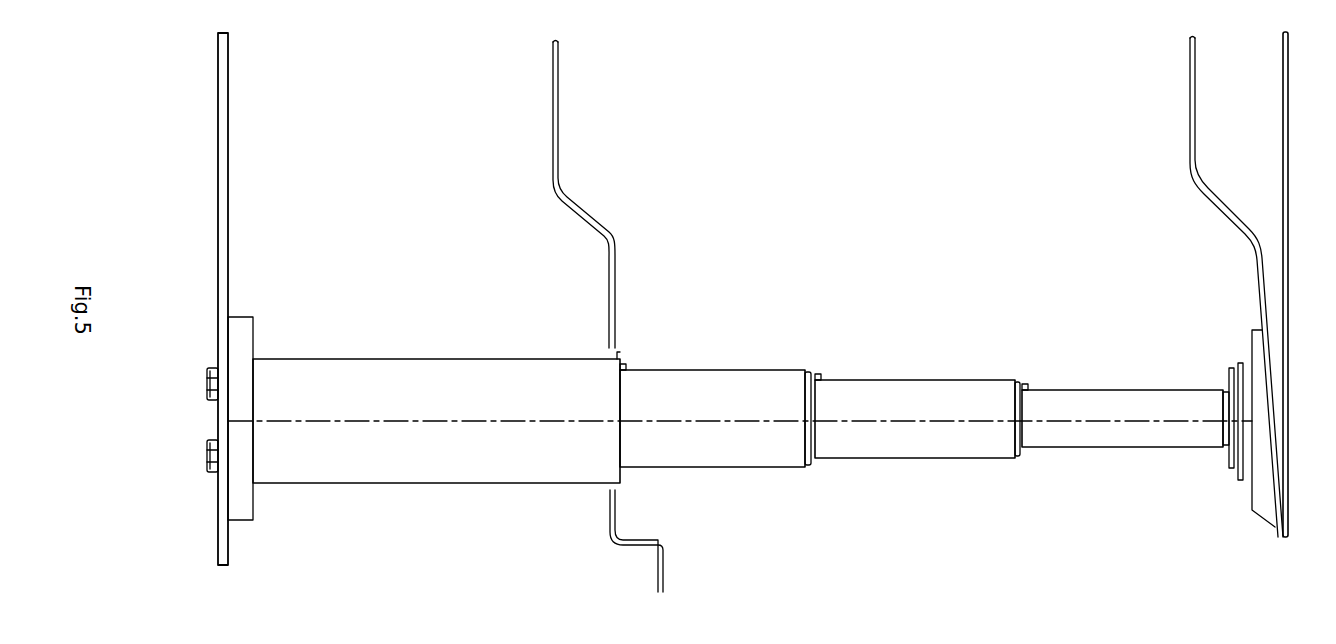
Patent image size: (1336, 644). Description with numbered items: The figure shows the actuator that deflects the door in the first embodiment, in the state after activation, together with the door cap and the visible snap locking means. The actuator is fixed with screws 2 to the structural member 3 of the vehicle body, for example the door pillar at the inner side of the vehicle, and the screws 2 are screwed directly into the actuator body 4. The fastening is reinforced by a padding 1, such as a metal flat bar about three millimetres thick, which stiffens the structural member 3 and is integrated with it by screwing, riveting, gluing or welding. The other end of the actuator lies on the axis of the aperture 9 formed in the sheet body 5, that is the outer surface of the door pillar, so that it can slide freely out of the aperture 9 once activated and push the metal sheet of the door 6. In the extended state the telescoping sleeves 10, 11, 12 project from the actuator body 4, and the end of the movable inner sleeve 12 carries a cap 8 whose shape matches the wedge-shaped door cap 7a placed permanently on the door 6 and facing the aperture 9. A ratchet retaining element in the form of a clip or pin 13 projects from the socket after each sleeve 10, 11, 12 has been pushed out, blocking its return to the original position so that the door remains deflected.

The padding 1 is at (312, 352).
The screws 2 is at (155, 449).
The structural member 3 is at (156, 299).
The actuator body 4 is at (436, 470).
The sheet body 5 is at (648, 195).
The door 6 is at (1177, 272).
The door cap 7a is at (1172, 316).
The cap 8 is at (1156, 335).
The aperture 9 is at (578, 540).
The sleeve 10 is at (721, 479).
The sleeve 11 is at (917, 483).
The inner sleeve 12 is at (1128, 474).
The clip or pin 13 is at (870, 323).